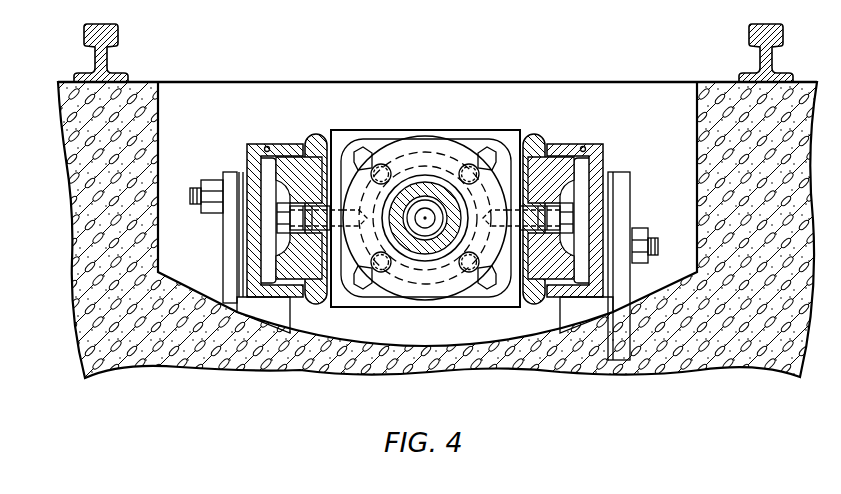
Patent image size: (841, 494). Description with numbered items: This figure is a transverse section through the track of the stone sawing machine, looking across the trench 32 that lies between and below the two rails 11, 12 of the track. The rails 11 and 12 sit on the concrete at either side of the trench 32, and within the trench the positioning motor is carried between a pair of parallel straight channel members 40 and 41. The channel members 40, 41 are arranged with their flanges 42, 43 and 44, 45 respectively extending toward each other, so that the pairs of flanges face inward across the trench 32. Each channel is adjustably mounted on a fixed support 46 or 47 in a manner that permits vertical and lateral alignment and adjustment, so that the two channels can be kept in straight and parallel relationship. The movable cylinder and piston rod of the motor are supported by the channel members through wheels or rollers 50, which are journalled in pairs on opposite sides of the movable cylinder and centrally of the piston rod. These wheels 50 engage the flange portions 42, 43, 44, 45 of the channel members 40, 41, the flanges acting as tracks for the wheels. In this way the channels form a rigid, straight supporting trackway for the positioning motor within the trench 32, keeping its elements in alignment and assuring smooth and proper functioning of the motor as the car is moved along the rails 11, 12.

The rail 11 is at (785, 28).
The rail 12 is at (88, 26).
The trench 32 is at (670, 260).
The channel member 40 is at (246, 165).
The channel member 41 is at (607, 163).
The flange 42 is at (268, 147).
The flange 43 is at (290, 333).
The flange 44 is at (553, 147).
The flange 45 is at (567, 297).
The fixed support 46 is at (230, 230).
The fixed support 47 is at (623, 213).
The wheel or roller 50 is at (318, 138).